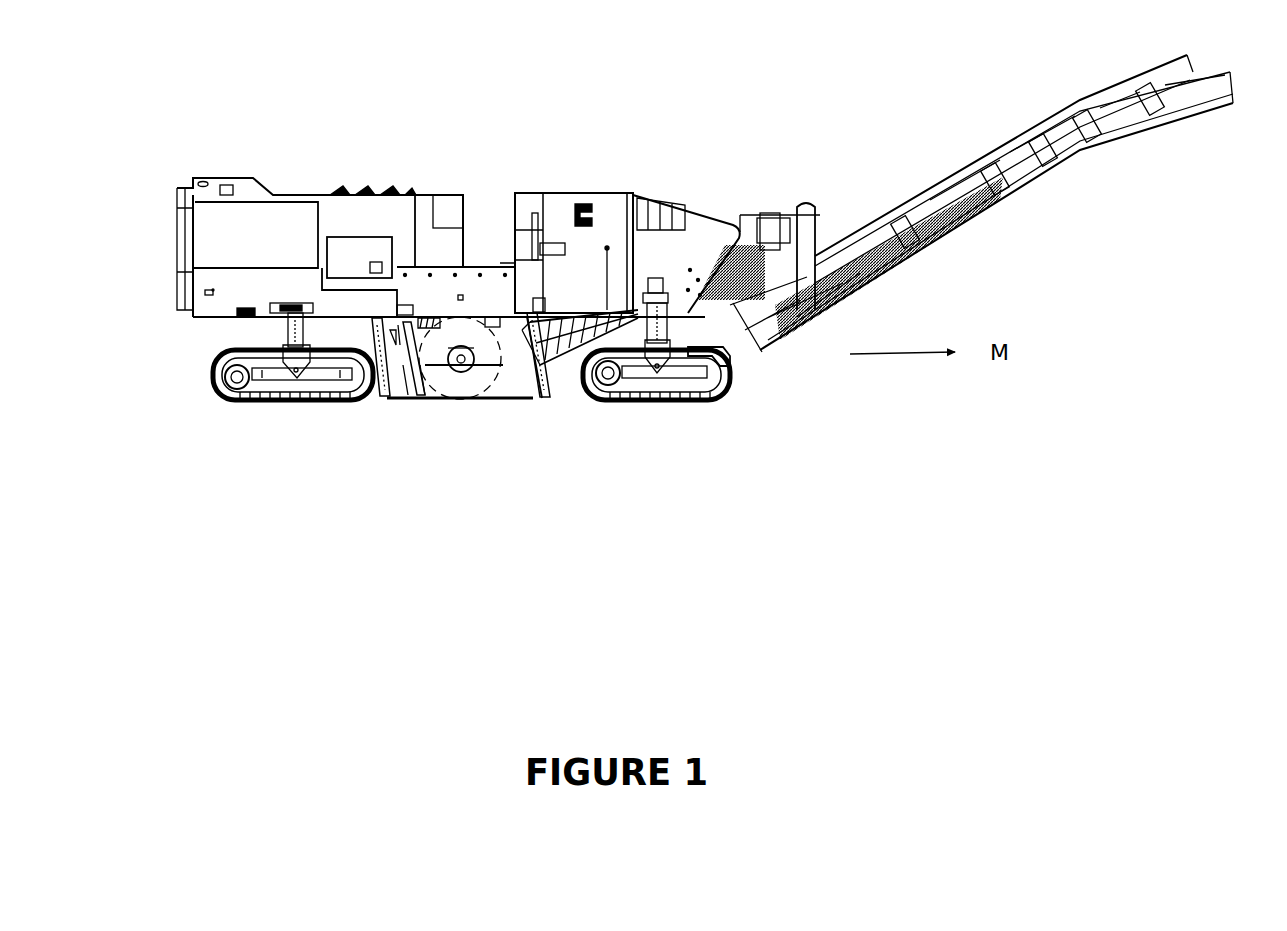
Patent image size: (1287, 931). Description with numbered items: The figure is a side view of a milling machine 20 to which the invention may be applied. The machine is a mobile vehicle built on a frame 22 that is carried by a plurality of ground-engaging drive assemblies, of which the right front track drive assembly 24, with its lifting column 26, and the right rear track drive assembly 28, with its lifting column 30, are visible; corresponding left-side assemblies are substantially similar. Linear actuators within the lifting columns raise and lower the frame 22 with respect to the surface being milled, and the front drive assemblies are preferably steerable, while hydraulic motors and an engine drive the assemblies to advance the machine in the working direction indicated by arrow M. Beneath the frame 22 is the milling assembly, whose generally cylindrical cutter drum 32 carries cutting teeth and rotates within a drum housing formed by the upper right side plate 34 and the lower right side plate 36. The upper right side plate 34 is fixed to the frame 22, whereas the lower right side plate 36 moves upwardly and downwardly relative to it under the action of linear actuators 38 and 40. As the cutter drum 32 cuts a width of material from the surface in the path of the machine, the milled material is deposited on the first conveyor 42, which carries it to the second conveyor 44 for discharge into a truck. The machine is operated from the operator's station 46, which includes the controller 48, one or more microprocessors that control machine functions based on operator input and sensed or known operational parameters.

The milling machine 20 is at (700, 82).
The frame 22 is at (235, 327).
The right front track drive assembly 24 is at (754, 383).
The lifting column 26 is at (674, 326).
The right rear track drive assembly 28 is at (195, 405).
The lifting column 30 is at (280, 329).
The cutter drum 32 is at (508, 380).
The upper right side plate 34 is at (446, 345).
The lower right side plate 36 is at (417, 392).
The linear actuator 38 is at (366, 340).
The linear actuator 40 is at (552, 382).
The first conveyor 42 is at (599, 338).
The second conveyor 44 is at (1013, 209).
The operator's station 46 is at (496, 210).
The controller 48 is at (572, 248).